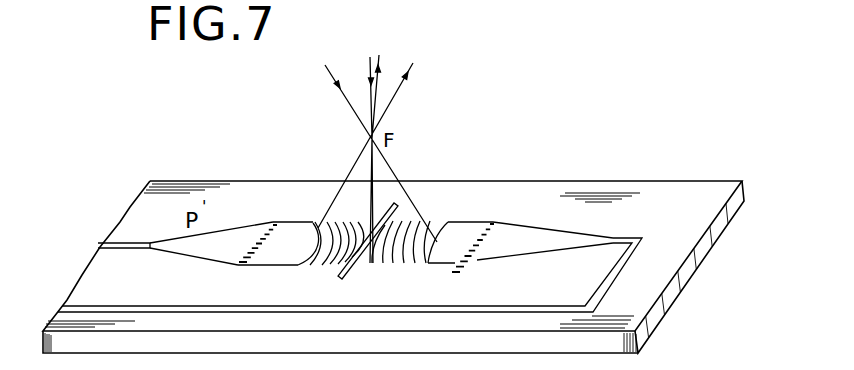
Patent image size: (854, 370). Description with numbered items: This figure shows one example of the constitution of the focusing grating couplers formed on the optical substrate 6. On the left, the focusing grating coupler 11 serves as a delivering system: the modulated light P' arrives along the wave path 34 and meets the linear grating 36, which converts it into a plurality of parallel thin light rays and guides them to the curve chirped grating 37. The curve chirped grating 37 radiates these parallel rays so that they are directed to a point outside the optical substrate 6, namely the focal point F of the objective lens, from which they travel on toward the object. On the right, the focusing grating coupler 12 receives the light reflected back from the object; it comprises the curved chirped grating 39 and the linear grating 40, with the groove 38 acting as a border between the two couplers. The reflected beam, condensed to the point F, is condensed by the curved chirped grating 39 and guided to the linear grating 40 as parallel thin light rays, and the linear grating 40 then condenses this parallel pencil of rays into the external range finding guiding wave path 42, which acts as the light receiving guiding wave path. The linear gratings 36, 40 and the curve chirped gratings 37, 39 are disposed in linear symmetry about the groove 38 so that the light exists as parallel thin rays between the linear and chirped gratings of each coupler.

The optical substrate 6 is at (613, 181).
The focusing grating coupler 11 is at (296, 212).
The focusing grating coupler 12 is at (450, 215).
The wave path 34 is at (122, 243).
The linear grating 36 is at (243, 268).
The curve chirped grating 37 is at (327, 266).
The groove 38 is at (357, 268).
The curved chirped grating 39 is at (413, 262).
The linear grating 40 is at (466, 265).
The external range finding guiding wave path 42 is at (620, 263).